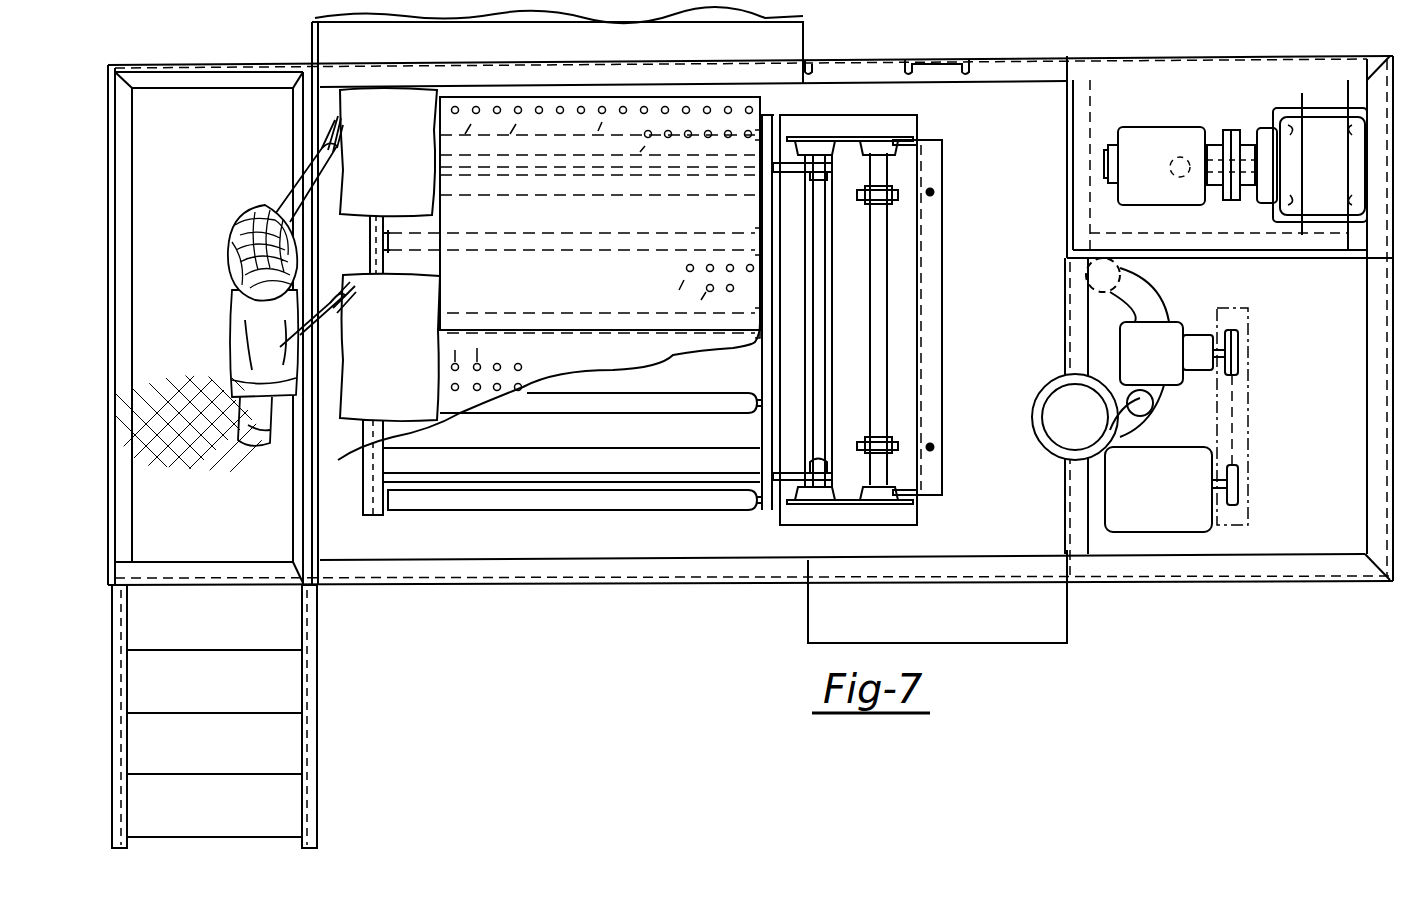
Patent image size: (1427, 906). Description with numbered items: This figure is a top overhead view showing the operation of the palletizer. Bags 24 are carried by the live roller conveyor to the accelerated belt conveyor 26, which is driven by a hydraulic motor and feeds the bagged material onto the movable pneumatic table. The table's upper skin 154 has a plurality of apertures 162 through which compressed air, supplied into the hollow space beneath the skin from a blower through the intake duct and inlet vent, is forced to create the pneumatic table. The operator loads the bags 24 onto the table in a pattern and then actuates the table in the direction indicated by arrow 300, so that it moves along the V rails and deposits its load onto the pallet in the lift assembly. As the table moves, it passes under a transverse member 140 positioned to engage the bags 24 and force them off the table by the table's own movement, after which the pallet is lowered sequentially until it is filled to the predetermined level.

The arrow 300 is at (507, 23).
The accelerated belt conveyor 26 is at (410, 56).
The bags 24 is at (400, 170).
The apertures 162 is at (730, 137).
The transverse member 140 is at (612, 380).
The upper skin 154 is at (673, 343).